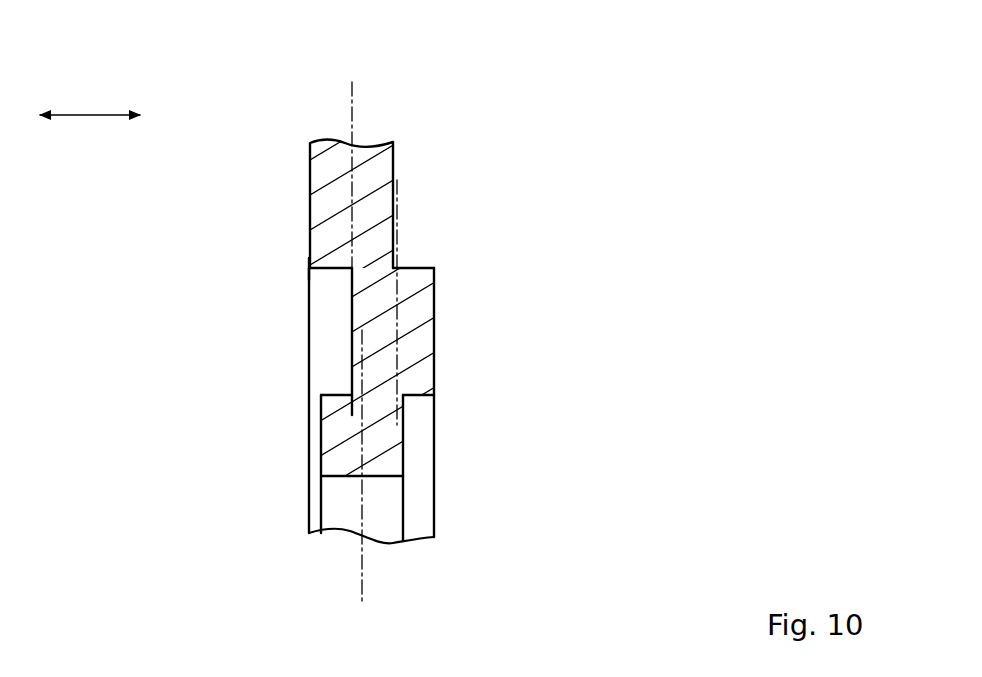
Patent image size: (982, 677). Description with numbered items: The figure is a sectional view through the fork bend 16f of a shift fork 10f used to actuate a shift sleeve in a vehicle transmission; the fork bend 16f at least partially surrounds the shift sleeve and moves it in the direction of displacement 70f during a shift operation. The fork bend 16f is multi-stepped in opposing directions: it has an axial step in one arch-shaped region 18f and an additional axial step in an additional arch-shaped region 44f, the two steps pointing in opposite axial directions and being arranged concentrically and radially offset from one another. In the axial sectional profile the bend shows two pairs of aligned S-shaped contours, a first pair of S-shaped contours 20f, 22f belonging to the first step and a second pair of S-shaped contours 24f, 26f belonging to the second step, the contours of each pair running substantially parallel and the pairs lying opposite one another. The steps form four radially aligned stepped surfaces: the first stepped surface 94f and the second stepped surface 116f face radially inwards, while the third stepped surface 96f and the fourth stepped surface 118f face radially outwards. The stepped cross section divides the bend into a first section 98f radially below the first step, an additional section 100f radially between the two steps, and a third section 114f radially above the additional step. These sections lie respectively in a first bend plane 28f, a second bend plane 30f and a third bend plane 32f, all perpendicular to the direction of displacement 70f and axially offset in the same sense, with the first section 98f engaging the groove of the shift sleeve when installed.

The shift fork 10f is at (614, 98).
The fork bend 16f is at (595, 152).
The region 18f is at (524, 388).
The S-shaped contour 20f is at (448, 402).
The S-shaped contour 22f is at (298, 375).
The S-shaped contour 24f is at (436, 252).
The S-shaped contour 26f is at (300, 265).
The first bend plane 28f is at (362, 565).
The second bend plane 30f is at (398, 316).
The third bend plane 32f is at (352, 118).
The additional region 44f is at (524, 253).
The direction of displacement 70f is at (90, 113).
The first stepped surface 94f is at (421, 395).
The third stepped surface 96f is at (341, 401).
The first section 98f is at (335, 440).
The additional section 100f is at (410, 355).
The third section 114f is at (342, 188).
The second stepped surface 116f is at (336, 281).
The fourth stepped surface 118f is at (426, 257).